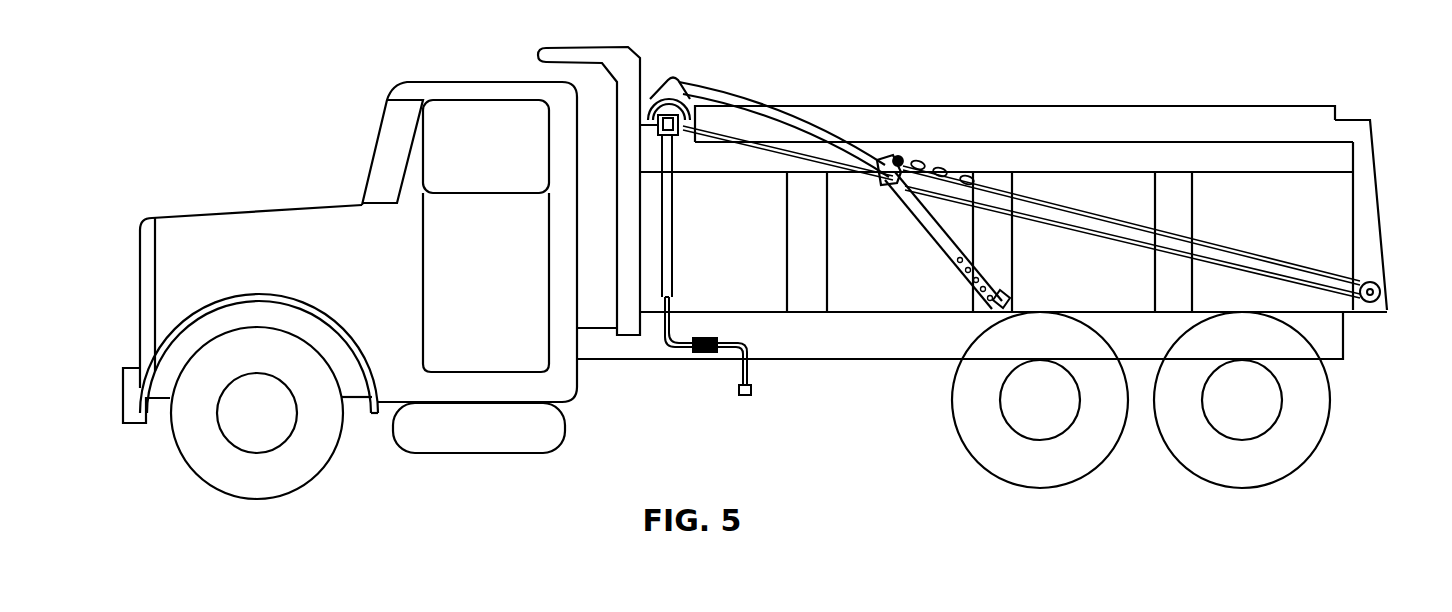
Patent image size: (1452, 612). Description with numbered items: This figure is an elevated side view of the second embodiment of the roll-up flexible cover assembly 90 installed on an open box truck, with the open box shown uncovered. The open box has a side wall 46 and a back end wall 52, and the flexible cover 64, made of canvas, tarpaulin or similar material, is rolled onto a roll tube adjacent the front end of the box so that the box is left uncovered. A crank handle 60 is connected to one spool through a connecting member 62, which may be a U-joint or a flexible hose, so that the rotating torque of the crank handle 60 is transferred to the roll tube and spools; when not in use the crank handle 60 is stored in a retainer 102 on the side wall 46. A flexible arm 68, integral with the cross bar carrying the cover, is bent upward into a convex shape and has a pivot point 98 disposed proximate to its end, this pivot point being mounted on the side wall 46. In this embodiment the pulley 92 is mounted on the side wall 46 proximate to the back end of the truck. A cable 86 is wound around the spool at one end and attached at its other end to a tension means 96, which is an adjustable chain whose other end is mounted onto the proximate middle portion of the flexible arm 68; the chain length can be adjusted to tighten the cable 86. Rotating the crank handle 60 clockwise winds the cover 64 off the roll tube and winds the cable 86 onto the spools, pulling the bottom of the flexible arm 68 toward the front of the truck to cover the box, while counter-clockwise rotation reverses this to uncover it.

The side wall 46 is at (1340, 193).
The back end wall 52 is at (1373, 124).
The crank handle 60 is at (686, 240).
The connecting member 62 is at (657, 138).
The flexible cover 64 is at (667, 88).
The flexible arm 68 is at (822, 126).
The cable 86 is at (760, 155).
The roll-up flexible cover assembly 90 is at (688, 93).
The pulley 92 is at (1380, 282).
The tension means 96 is at (918, 160).
The pivot point 98 is at (1005, 296).
The retainer 102 is at (718, 342).